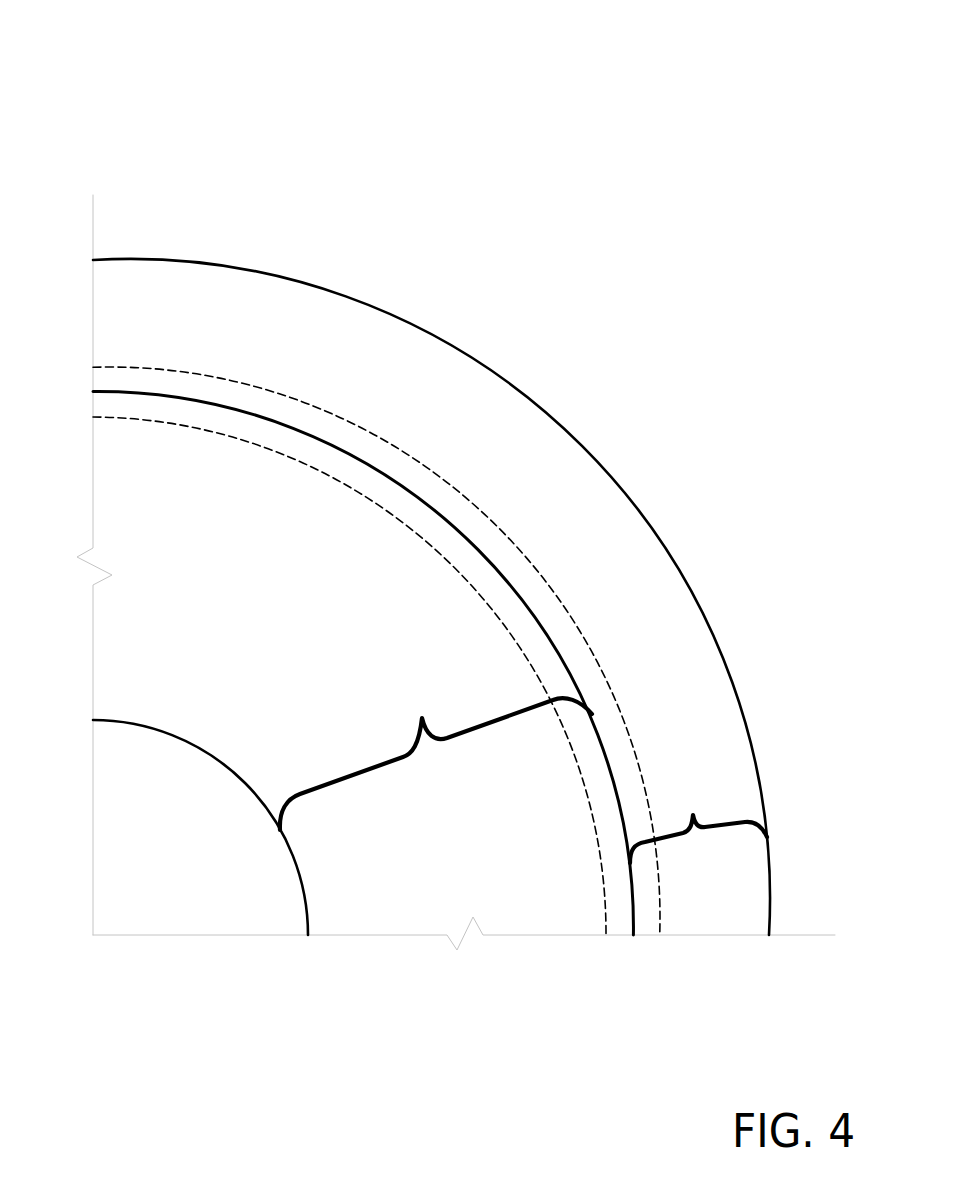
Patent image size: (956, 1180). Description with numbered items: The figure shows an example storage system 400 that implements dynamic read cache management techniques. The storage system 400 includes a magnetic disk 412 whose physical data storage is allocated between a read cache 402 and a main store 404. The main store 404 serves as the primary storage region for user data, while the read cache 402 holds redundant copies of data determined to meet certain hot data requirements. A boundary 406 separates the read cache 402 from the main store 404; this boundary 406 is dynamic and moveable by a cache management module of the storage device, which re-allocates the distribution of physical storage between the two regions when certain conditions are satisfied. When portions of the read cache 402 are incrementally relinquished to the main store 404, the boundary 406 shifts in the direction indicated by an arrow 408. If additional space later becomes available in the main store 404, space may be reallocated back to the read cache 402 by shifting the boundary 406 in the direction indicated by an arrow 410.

The storage system 400 is at (148, 79).
The read cache 402 is at (693, 815).
The main store 404 is at (422, 718).
The boundary 406 is at (570, 670).
The arrow 408 is at (332, 443).
The arrow 410 is at (363, 465).
The magnetic disk 412 is at (563, 425).